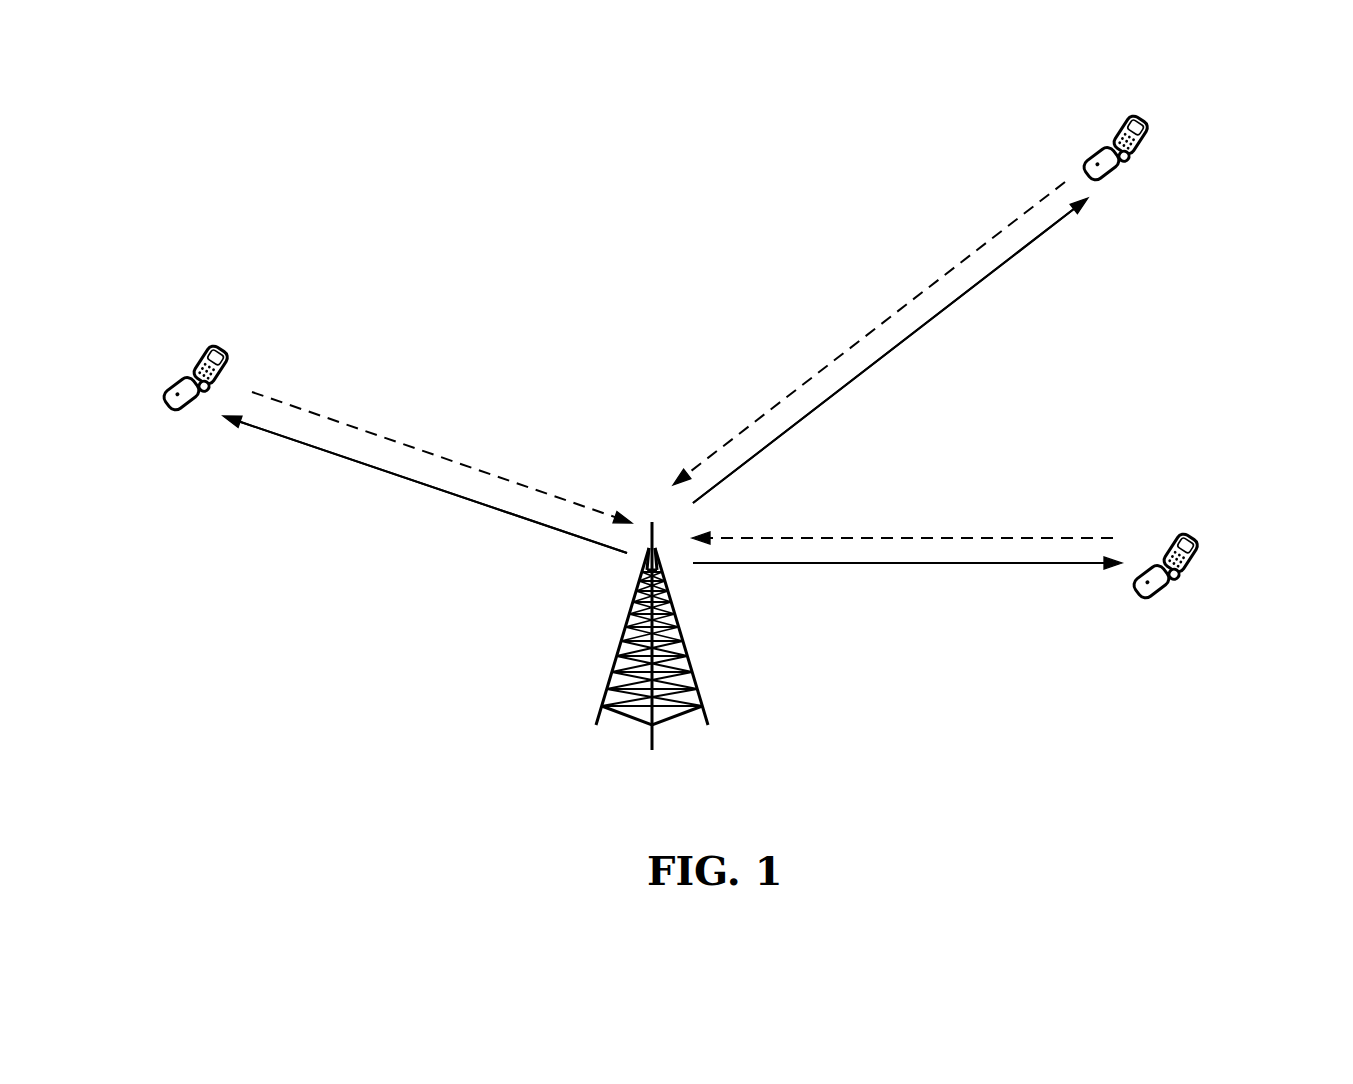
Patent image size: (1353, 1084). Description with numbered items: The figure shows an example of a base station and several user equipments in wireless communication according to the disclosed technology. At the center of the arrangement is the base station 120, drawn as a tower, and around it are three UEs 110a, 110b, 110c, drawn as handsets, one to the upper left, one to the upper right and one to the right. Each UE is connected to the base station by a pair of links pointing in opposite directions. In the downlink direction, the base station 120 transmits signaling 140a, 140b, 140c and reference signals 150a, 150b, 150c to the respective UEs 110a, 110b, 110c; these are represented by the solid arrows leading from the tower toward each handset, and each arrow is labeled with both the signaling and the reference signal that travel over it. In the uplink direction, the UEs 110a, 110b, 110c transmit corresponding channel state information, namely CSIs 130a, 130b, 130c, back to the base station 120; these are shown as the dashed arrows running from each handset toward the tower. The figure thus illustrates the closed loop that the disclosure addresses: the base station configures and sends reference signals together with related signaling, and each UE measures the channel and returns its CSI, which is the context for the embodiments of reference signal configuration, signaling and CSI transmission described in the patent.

The UE 110a is at (175, 346).
The UE 110b is at (1203, 568).
The UE 110c is at (1153, 152).
The base station 120 is at (720, 730).
The CSI 130a is at (465, 448).
The CSI 130b is at (917, 522).
The CSI 130c is at (873, 322).
The signaling 140a is at (440, 503).
The signaling 140b is at (957, 572).
The signaling 140c is at (947, 322).
The reference signal 150a is at (433, 510).
The reference signal 150b is at (898, 623).
The reference signal 150c is at (883, 356).